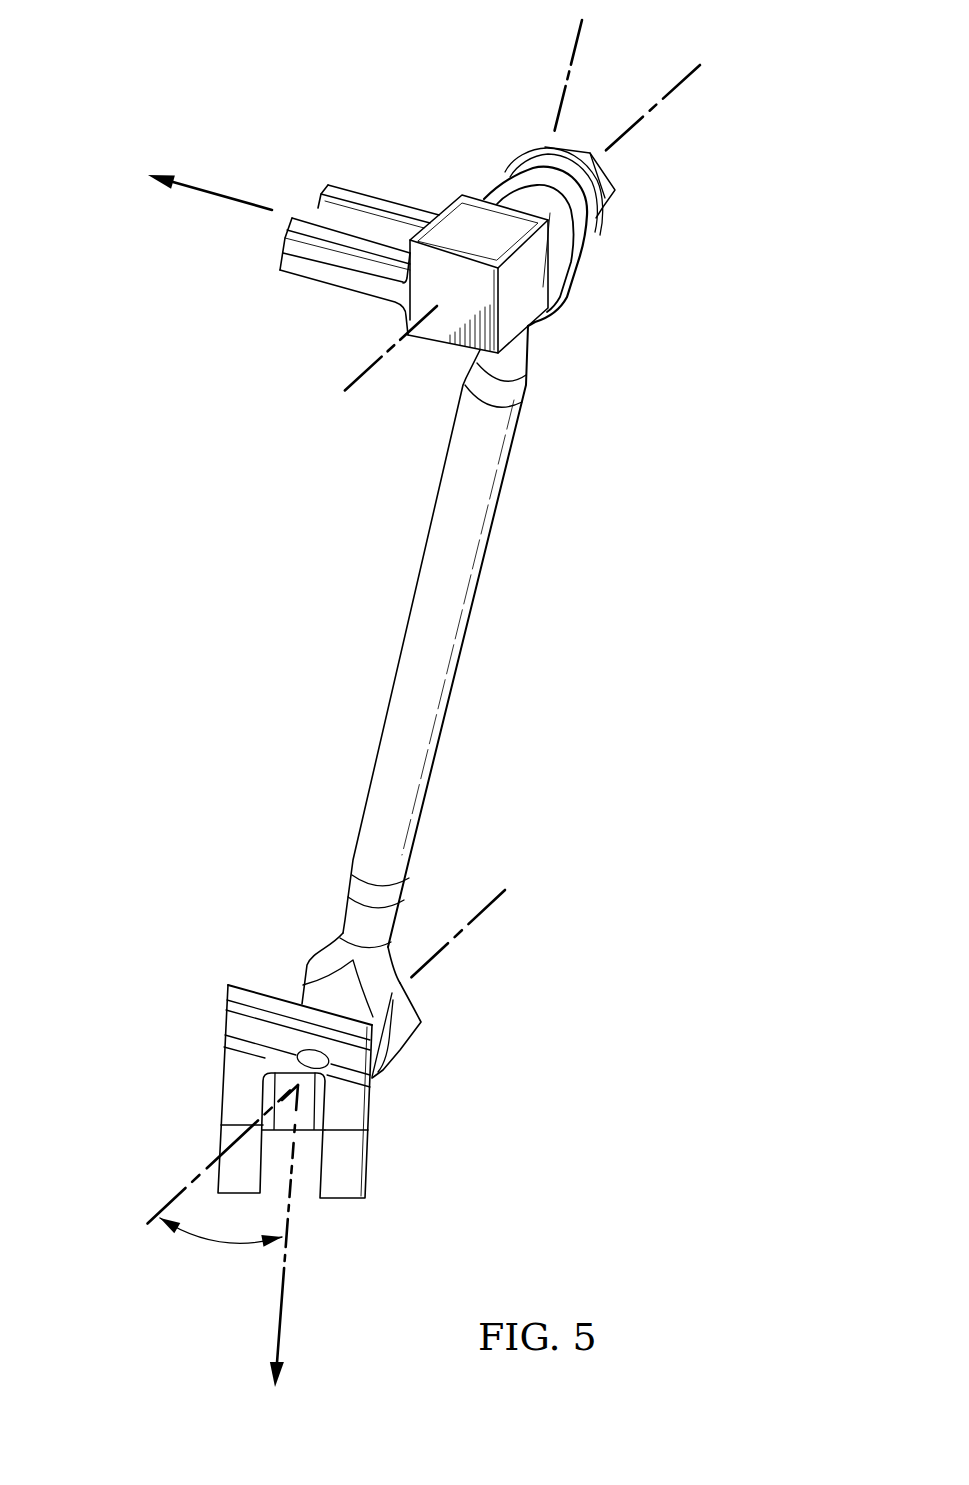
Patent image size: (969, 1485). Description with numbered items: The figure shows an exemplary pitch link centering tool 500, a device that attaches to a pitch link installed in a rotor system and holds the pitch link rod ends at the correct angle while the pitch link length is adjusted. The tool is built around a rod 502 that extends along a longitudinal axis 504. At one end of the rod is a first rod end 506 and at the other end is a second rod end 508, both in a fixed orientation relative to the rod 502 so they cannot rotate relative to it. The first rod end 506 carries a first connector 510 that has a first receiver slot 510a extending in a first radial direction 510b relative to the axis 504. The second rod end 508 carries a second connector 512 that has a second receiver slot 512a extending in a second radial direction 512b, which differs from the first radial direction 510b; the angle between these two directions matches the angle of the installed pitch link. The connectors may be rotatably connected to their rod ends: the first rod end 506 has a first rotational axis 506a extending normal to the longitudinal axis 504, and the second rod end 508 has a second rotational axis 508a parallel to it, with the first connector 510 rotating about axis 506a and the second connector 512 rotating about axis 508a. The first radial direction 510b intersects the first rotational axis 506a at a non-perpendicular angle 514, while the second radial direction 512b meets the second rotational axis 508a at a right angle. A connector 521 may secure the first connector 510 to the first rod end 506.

The centering tool 500 is at (88, 92).
The rod 502 is at (467, 637).
The longitudinal axis 504 is at (574, 45).
The first rod end 506 is at (305, 976).
The first rotational axis 506a is at (177, 1193).
The second rod end 508 is at (578, 262).
The second rotational axis 508a is at (362, 374).
The first connector 510 is at (383, 1134).
The first receiver slot 510a is at (307, 1192).
The first radial direction 510b is at (285, 1303).
The second connector 512 is at (441, 187).
The second receiver slot 512a is at (364, 222).
The second radial direction 512b is at (220, 198).
The non-perpendicular angle 514 is at (217, 1240).
The connector 521 is at (614, 176).